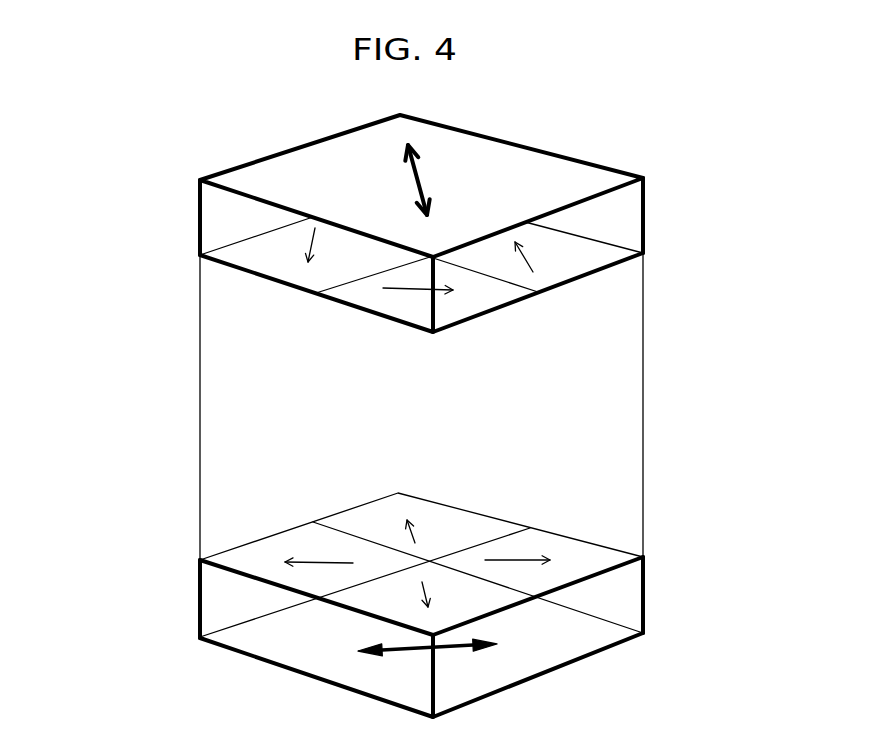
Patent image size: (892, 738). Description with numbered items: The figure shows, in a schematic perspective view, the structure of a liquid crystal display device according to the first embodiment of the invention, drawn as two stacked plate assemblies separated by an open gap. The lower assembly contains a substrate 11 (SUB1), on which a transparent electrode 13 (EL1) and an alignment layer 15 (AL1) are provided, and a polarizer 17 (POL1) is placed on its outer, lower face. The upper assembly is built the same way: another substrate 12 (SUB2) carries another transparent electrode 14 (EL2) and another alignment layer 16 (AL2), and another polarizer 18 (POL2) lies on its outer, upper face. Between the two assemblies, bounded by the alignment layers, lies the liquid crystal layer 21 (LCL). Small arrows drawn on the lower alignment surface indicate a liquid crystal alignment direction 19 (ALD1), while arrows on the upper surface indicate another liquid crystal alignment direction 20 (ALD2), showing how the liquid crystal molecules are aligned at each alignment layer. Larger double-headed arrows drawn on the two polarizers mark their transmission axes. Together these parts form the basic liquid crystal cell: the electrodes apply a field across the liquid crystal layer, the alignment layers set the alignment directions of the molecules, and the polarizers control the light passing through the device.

The substrate 11 is at (227, 607).
The substrate 12 is at (225, 227).
The transparent electrode 13 is at (603, 573).
The transparent electrode 14 is at (620, 263).
The alignment layer 15 is at (540, 545).
The alignment layer 16 is at (563, 265).
The polarizer 17 is at (340, 645).
The polarizer 18 is at (478, 163).
The liquid crystal alignment direction 19 is at (548, 565).
The liquid crystal alignment direction 20 is at (533, 262).
The liquid crystal layer 21 is at (237, 405).